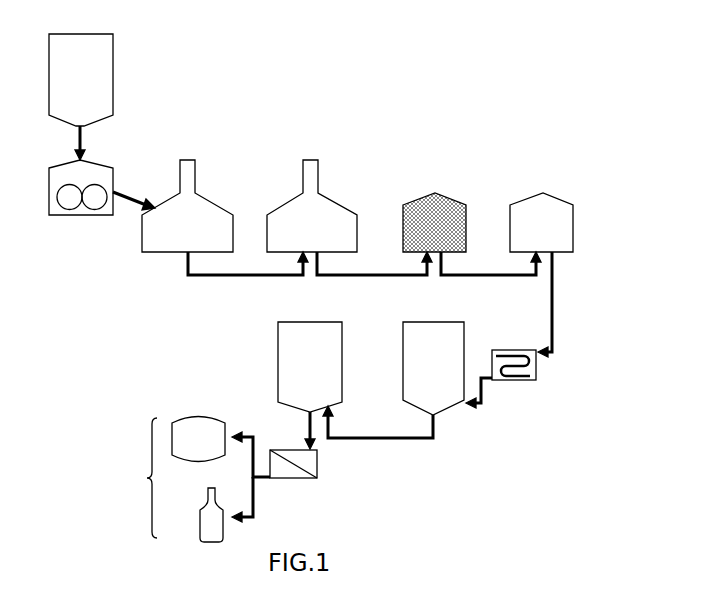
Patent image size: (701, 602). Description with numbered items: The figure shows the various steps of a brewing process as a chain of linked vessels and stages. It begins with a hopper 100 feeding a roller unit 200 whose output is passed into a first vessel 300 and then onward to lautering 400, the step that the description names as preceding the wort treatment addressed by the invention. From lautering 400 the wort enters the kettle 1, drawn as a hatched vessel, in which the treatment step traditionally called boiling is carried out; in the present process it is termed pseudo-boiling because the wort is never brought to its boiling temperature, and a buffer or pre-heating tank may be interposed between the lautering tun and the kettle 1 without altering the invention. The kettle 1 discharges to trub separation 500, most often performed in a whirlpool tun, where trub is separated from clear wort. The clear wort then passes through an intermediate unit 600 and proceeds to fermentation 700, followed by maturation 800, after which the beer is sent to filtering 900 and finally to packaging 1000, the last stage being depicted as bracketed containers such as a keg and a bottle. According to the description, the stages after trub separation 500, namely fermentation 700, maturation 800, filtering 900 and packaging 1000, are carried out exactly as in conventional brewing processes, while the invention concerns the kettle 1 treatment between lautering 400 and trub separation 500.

The raw material hopper 100 is at (113, 82).
The crusher/roller mill 200 is at (110, 158).
The first reaction vessel 300 is at (205, 200).
The lautering 400 is at (328, 200).
The kettle 1 is at (450, 196).
The trub separation 500 is at (557, 196).
The heat exchanger 600 is at (536, 366).
The fermentation 700 is at (464, 332).
The maturation 800 is at (342, 340).
The filtering 900 is at (317, 472).
The packaging 1000 is at (147, 478).